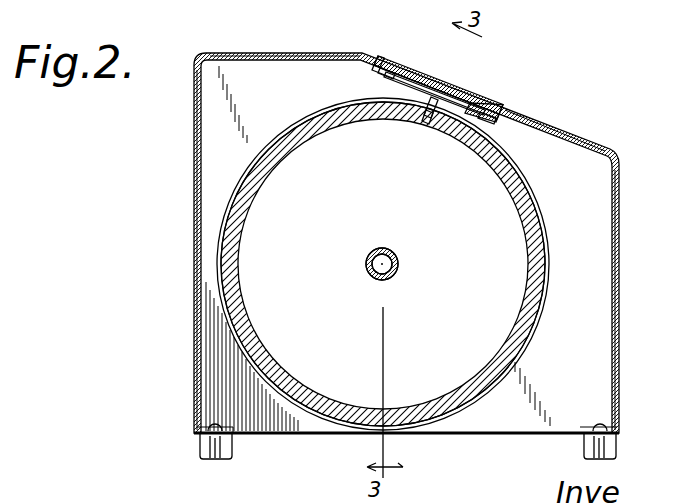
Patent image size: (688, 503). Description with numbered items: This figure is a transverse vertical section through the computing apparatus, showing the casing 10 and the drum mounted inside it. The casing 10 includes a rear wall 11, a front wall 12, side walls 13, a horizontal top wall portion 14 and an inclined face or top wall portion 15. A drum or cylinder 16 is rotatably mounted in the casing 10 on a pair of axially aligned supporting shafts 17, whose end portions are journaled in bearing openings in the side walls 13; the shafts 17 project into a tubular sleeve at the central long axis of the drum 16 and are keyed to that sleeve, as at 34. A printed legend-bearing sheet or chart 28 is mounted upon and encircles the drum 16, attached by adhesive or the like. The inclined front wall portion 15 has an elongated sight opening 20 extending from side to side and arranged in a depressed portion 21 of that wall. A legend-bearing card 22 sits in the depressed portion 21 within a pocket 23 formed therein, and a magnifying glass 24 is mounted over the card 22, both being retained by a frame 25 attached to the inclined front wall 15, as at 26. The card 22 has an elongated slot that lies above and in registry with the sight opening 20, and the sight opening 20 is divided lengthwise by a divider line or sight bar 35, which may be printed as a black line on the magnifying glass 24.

The casing 10 is at (610, 130).
The rear wall 11 is at (195, 320).
The front wall 12 is at (620, 325).
The side walls 13 is at (580, 372).
The horizontal top wall portion 14 is at (318, 31).
The inclined front wall portion 15 is at (533, 118).
The drum 16 is at (530, 325).
The supporting shafts 17 is at (398, 270).
The sight opening 20 is at (413, 103).
The depressed portion 21 is at (480, 115).
The legend-bearing card 22 is at (493, 105).
The pocket 23 is at (393, 75).
The magnifying glass 24 is at (477, 97).
The frame 25 is at (393, 60).
The frame attachment 26 is at (377, 60).
The legend-bearing chart 28 is at (550, 273).
The key 34 is at (455, 85).
The sight bar 35 is at (438, 100).